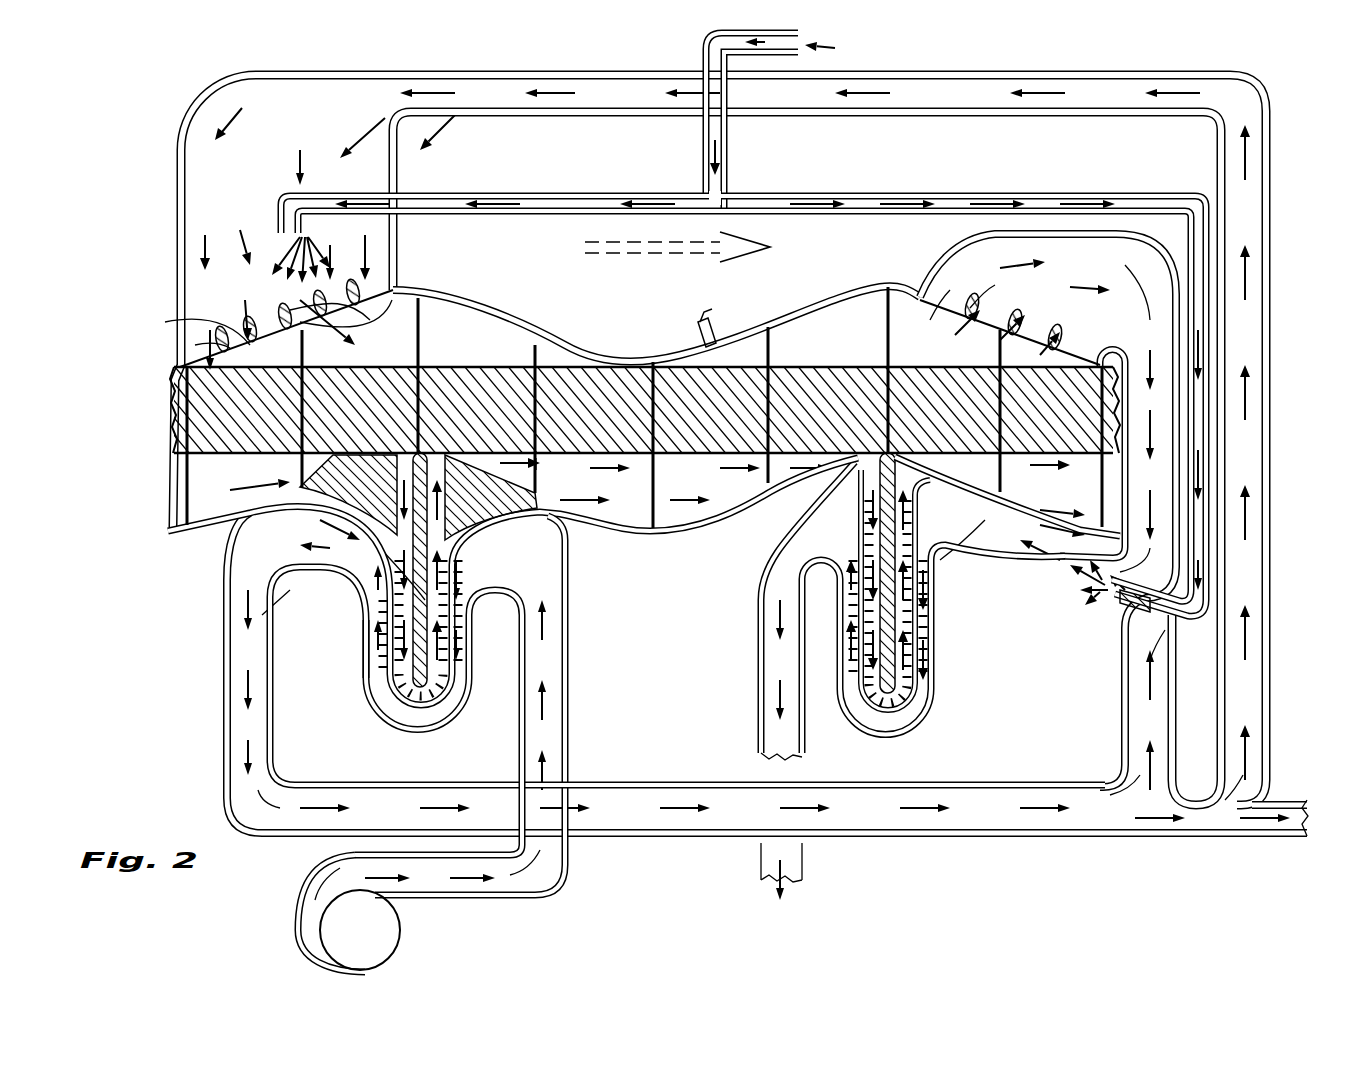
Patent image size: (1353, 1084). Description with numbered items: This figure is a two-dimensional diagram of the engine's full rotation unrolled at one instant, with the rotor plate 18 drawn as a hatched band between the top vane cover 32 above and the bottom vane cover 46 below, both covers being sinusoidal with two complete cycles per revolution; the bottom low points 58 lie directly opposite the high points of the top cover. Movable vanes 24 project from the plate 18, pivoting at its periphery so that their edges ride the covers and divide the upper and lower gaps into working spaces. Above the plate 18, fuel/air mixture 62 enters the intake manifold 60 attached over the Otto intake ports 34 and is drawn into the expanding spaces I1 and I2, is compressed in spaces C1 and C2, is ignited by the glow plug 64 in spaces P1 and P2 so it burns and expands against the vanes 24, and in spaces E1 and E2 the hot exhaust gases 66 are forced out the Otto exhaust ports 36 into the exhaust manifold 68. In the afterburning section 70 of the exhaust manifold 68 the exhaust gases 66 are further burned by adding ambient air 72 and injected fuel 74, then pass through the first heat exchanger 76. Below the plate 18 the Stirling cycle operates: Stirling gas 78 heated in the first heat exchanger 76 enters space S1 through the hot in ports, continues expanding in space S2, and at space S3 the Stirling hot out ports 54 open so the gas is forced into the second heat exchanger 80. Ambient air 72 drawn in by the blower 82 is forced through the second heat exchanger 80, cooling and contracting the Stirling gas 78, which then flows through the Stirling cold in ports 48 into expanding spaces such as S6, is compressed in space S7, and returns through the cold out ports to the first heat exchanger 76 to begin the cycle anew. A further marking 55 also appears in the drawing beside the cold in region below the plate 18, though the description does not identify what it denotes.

The plate 18 is at (639, 410).
The movable vanes 24 is at (425, 340).
The top vane cover 32 is at (605, 352).
The Otto intake ports 34 is at (200, 322).
The Otto exhaust ports 36 is at (1010, 330).
The bottom vane cover 46 is at (684, 537).
The Stirling cold in ports 48 is at (575, 530).
The Stirling hot out ports 54 is at (395, 455).
The port 55 is at (536, 478).
The bottom low points 58 is at (768, 460).
The intake manifold 60 is at (398, 245).
The fuel/air mixture 62 is at (300, 310).
The glow plug 64 is at (710, 322).
The hot exhaust gases 66 is at (742, 643).
The exhaust manifold 68 is at (985, 262).
The afterburning section 70 is at (1125, 615).
The ambient air 72 is at (1150, 706).
The injected fuel 74 is at (800, 48).
The first heat exchanger 76 is at (935, 625).
The Stirling gas 78 is at (455, 635).
The second heat exchanger 80 is at (370, 698).
The blower 82 is at (400, 928).
The space S1 is at (1015, 473).
The space S2 is at (1071, 490).
The space S3 is at (211, 471).
The space S6 is at (601, 483).
The space S7 is at (691, 485).
The space I1 is at (272, 355).
The space I2 is at (387, 355).
The space C1 is at (487, 355).
The space C2 is at (556, 355).
The space P1 is at (753, 355).
The space P2 is at (859, 355).
The space E1 is at (918, 355).
The space E2 is at (1023, 357).